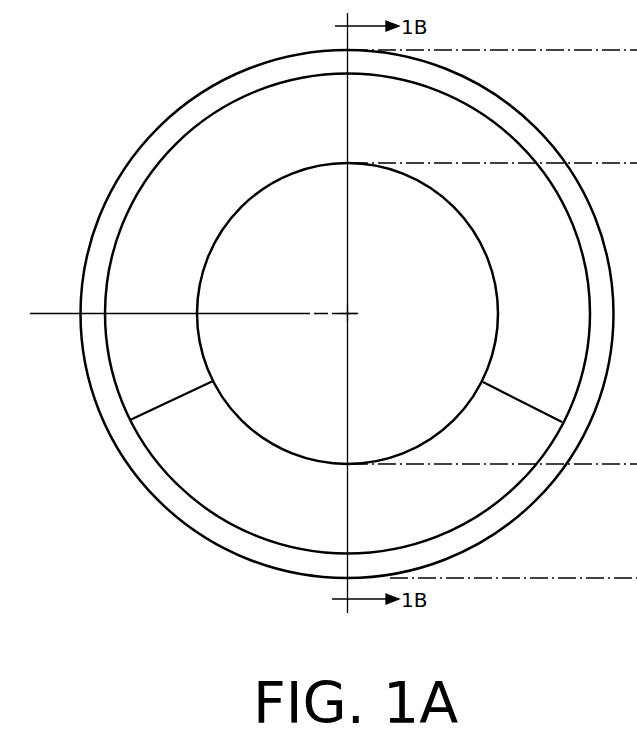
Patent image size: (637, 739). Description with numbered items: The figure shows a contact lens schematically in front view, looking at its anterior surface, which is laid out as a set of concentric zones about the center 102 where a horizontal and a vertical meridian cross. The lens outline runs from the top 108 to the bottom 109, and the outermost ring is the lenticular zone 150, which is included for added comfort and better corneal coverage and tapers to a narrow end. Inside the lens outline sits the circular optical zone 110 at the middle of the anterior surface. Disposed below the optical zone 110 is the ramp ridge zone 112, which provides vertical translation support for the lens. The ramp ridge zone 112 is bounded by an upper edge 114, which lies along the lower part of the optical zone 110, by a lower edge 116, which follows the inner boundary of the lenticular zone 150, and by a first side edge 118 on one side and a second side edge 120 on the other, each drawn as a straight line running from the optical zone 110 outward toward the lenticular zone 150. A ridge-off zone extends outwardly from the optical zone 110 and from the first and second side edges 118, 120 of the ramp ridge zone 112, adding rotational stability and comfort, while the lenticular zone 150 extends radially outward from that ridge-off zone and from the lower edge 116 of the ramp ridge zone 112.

The center 102 is at (348, 311).
The top 108 is at (341, 48).
The bottom 109 is at (343, 578).
The optical zone 110 is at (326, 163).
The ramp ridge zone 112 is at (167, 433).
The upper edge 114 is at (222, 398).
The lower edge 116 is at (195, 500).
The first side edge 118 is at (148, 410).
The second side edge 120 is at (535, 405).
The lenticular zone 150 is at (186, 506).